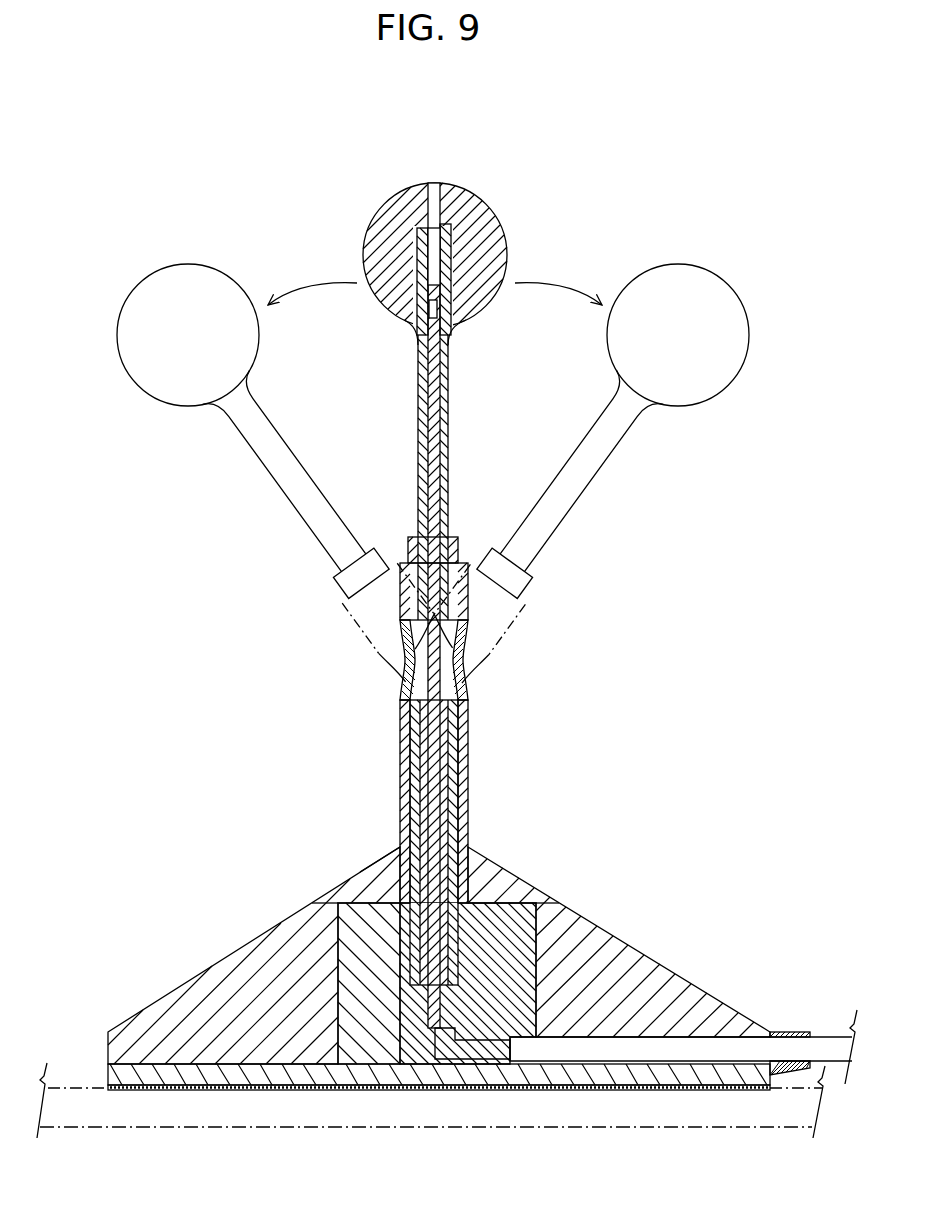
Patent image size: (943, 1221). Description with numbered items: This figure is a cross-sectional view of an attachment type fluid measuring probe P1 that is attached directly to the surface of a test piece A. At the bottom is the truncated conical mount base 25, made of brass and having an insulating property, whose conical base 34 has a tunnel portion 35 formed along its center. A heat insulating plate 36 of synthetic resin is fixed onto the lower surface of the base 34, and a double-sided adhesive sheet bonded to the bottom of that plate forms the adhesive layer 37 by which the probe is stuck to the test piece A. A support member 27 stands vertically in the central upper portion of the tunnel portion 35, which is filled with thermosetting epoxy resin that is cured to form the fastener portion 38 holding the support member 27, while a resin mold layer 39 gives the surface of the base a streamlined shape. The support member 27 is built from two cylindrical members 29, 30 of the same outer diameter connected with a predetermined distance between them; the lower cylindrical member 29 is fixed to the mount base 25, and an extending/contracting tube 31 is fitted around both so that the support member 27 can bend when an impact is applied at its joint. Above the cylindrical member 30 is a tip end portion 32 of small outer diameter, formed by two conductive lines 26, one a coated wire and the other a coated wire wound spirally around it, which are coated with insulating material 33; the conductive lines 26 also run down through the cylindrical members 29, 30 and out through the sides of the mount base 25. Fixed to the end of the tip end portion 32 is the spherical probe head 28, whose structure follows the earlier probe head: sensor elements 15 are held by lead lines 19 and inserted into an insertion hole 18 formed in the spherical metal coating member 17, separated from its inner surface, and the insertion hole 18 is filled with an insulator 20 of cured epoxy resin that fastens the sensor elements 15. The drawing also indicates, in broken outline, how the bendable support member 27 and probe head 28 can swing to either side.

The sensor element 15 is at (446, 240).
The coating member 17 is at (388, 205).
The insertion hole 18 is at (420, 262).
The lead line 19 is at (412, 303).
The insulator 20 is at (443, 270).
The mount base 25 is at (612, 924).
The conductive line 26 is at (441, 425).
The support member 27 is at (302, 526).
The probe head 28 is at (463, 190).
The cylindrical member 29 is at (460, 780).
The cylindrical member 30 is at (456, 543).
The extending/contracting tube 31 is at (462, 688).
The tip end portion 32 is at (448, 456).
The insulating material 33 is at (420, 462).
The base 34 is at (250, 962).
The tunnel portion 35 is at (345, 930).
The heat insulating plate 36 is at (372, 1074).
The adhesive layer 37 is at (302, 1090).
The fastener portion 38 is at (508, 905).
The resin mold layer 39 is at (378, 858).
The test piece A is at (92, 1083).
The probe P1 is at (512, 190).